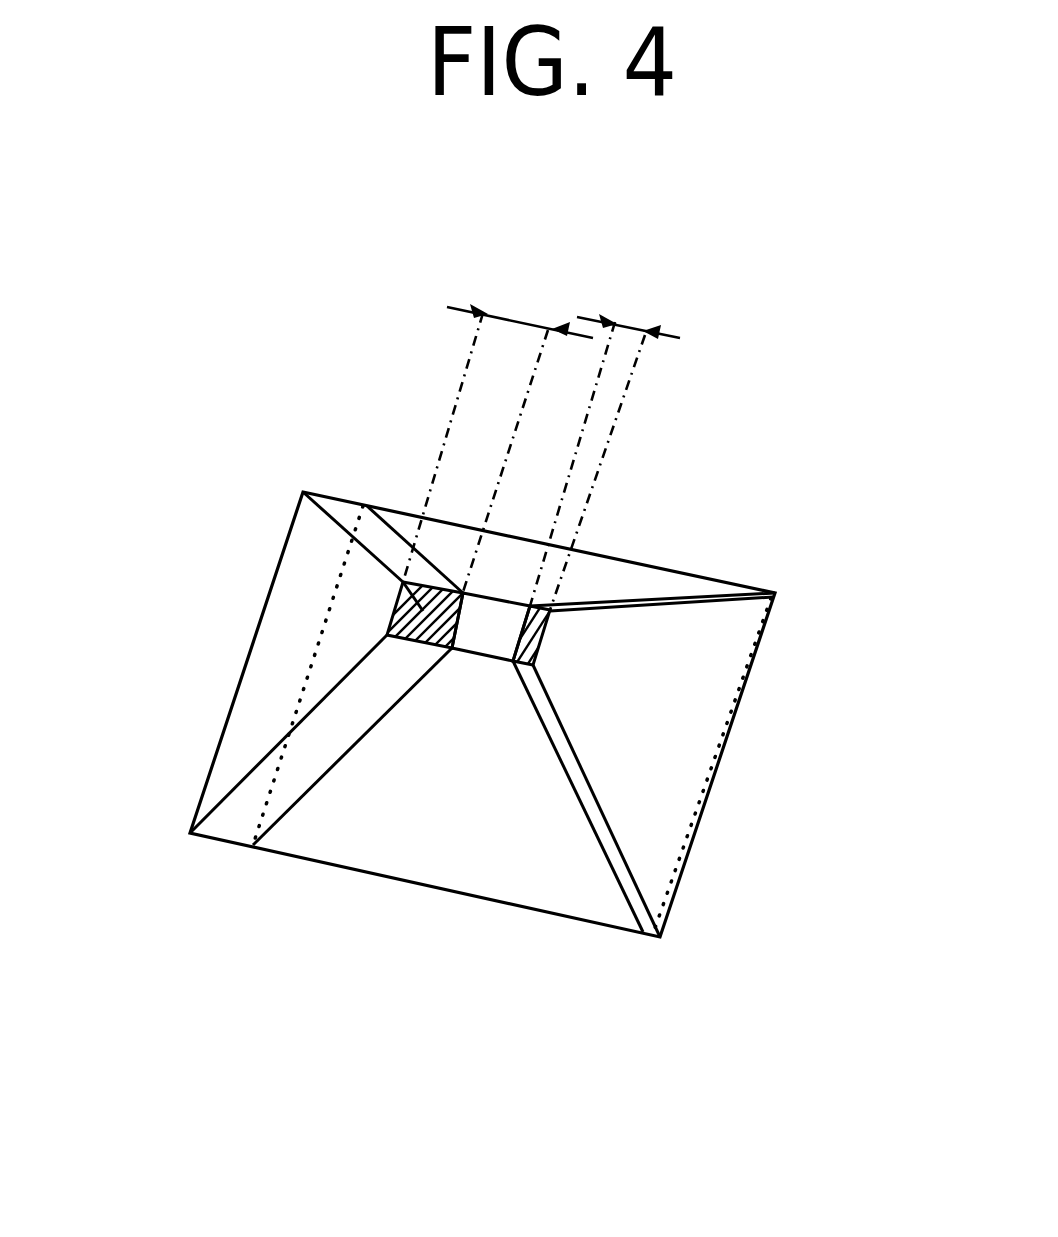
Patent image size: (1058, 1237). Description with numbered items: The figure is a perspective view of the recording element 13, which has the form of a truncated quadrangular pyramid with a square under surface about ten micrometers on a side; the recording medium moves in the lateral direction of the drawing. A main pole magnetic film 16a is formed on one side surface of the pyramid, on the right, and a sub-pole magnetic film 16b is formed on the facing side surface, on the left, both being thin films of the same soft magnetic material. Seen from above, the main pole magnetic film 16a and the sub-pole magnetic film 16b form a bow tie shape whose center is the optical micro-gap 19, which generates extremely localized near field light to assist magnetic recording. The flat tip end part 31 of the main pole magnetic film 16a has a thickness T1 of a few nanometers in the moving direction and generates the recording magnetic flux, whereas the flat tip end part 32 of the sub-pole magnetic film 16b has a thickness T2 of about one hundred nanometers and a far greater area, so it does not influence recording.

The recording element 13 is at (242, 355).
The main pole magnetic film 16a is at (600, 843).
The sub-pole magnetic film 16b is at (288, 782).
The optical micro-gap 19 is at (497, 635).
The flat tip end part 31 is at (543, 632).
The flat tip end part 32 is at (403, 582).
The thickness T1 is at (605, 423).
The thickness T2 is at (498, 411).